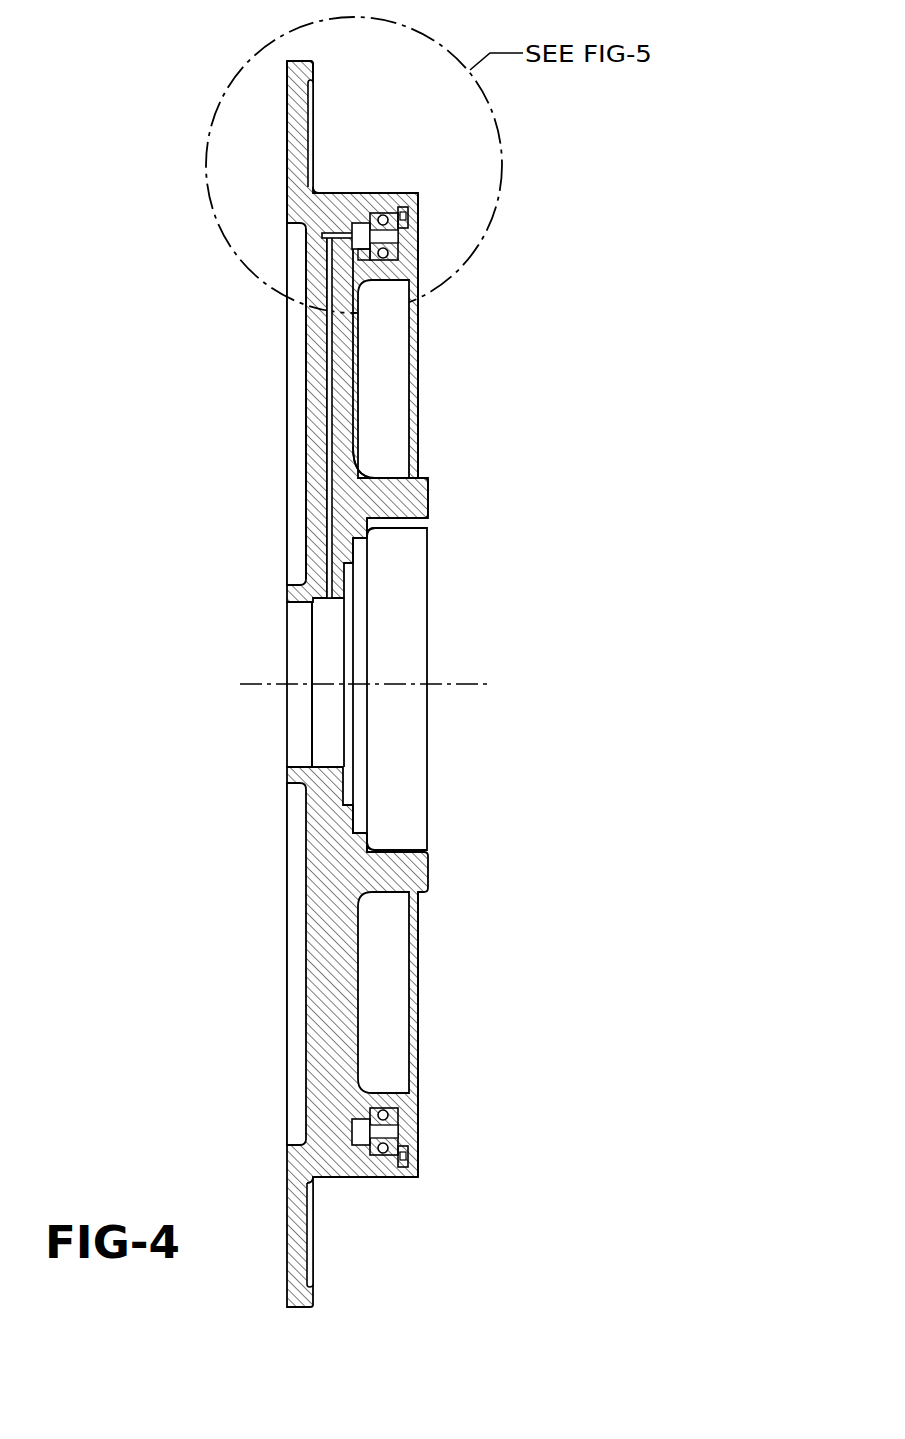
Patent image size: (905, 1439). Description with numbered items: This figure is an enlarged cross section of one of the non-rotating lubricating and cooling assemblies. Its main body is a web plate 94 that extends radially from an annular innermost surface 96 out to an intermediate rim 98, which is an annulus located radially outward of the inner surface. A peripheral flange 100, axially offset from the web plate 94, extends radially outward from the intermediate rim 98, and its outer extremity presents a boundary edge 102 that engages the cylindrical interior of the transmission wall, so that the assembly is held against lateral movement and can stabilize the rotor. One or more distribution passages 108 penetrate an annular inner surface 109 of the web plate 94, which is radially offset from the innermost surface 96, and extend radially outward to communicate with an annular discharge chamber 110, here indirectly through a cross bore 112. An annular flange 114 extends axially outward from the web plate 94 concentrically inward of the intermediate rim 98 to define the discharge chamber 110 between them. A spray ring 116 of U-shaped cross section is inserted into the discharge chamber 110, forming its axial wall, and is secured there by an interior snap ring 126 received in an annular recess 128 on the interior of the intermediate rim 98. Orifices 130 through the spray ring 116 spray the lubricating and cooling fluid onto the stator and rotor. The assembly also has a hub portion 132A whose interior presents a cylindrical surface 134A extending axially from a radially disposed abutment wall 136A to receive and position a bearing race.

The web plate 94 is at (313, 415).
The annular innermost surface 96 is at (303, 603).
The intermediate rim 98 is at (341, 202).
The peripheral flange 100 is at (292, 105).
The boundary edge 102 is at (300, 60).
The distribution passages 108 is at (328, 527).
The annular inner surface 109 is at (320, 601).
The annular discharge chamber 110 is at (355, 232).
The cross bore 112 is at (340, 235).
The annular flange 114 is at (388, 278).
The spray ring 116 is at (356, 256).
The interior snap ring 126 is at (407, 218).
The annular recess 128 is at (403, 1163).
The orifices 130 is at (400, 238).
The hub portion 132A is at (393, 492).
The cylindrical surface 134A is at (403, 520).
The abutment wall 136A is at (370, 528).